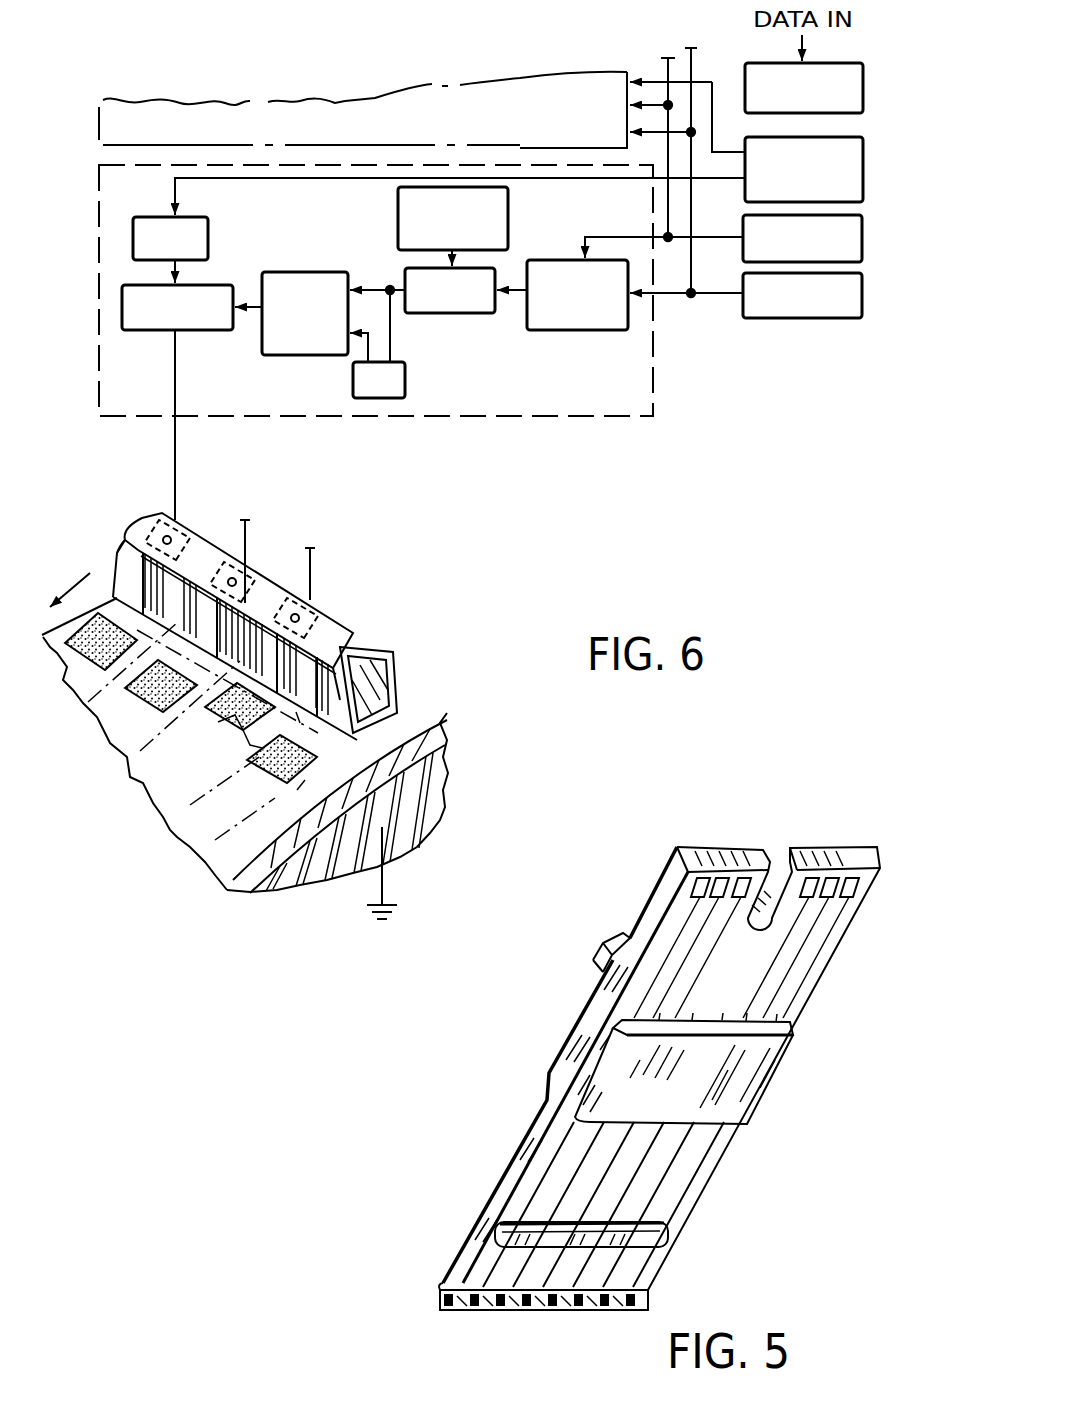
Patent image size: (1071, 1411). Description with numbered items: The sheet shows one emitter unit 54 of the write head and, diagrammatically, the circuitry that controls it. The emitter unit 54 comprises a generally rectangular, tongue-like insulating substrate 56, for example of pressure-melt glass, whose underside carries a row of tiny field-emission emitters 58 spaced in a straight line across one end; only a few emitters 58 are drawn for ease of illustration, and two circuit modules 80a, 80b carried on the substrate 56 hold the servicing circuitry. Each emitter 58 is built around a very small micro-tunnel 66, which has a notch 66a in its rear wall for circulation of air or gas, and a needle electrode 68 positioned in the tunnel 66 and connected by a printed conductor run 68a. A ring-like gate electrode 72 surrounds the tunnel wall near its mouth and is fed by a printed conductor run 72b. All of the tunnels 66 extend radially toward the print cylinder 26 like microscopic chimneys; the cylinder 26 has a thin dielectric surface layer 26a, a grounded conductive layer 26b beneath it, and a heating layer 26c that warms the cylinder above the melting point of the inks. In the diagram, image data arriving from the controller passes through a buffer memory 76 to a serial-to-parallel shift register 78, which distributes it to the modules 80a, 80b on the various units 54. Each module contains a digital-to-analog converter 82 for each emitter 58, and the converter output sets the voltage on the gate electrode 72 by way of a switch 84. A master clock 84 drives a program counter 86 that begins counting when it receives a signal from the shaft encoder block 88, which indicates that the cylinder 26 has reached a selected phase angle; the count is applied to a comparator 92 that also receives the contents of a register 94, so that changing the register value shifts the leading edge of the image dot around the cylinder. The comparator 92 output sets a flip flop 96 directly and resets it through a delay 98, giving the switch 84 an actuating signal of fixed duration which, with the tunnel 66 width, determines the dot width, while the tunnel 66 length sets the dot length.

In FIG. 6, the print cylinder 26 is at (283, 802).
In FIG. 6, the surface layer 26a is at (230, 884).
In FIG. 6, the conductive layer 26b is at (277, 874).
In FIG. 6, the heating layer 26c is at (340, 871).
In FIG. 5, the emitter unit 54 is at (528, 1083).
In FIG. 6, the insulating substrate 56 is at (523, 157).
In FIG. 5, the insulating substrate 56 is at (578, 1032).
In FIG. 6, the emitter 58 is at (290, 576).
In FIG. 5, the emitter 58 is at (557, 1310).
In FIG. 6, the micro-tunnel 66 is at (140, 517).
In FIG. 6, the notch 66a is at (377, 653).
In FIG. 6, the needle electrode 68 is at (190, 527).
In FIG. 6, the printed conductor run 68a is at (165, 522).
In FIG. 6, the gate electrode 72 is at (103, 558).
In FIG. 6, the printed conductor run 72b is at (120, 550).
In FIG. 6, the buffer memory 76 is at (864, 88).
In FIG. 6, the serial-to-parallel shift register 78 is at (864, 180).
In FIG. 5, the circuit module 80a is at (745, 1097).
In FIG. 5, the circuit module 80b is at (664, 1236).
In FIG. 6, the digital-to-analog converter 82 is at (208, 235).
In FIG. 6, the switch 84 is at (863, 296).
In FIG. 6, the program counter 86 is at (575, 330).
In FIG. 6, the encoder 88 is at (863, 237).
In FIG. 6, the comparator 92 is at (470, 313).
In FIG. 6, the register 94 is at (398, 228).
In FIG. 6, the flip flop 96 is at (300, 272).
In FIG. 6, the delay 98 is at (405, 385).